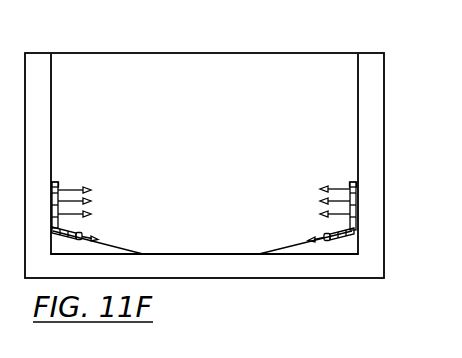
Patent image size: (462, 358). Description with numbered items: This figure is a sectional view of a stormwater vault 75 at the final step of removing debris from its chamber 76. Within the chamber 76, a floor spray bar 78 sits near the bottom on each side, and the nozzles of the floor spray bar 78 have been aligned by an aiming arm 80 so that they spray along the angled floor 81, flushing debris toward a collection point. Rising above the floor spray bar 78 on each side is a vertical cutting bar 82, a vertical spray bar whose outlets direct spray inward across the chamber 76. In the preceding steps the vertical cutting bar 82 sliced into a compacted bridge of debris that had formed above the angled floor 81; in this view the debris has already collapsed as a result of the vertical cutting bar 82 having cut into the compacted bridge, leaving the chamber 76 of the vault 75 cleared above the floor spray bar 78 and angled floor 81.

The stormwater vault 75 is at (391, 40).
The chamber 76 is at (266, 73).
The floor spray bar 78 is at (366, 228).
The aiming arm 80 is at (339, 243).
The angled floor 81 is at (139, 256).
The vertical cutting bar 82 is at (364, 190).